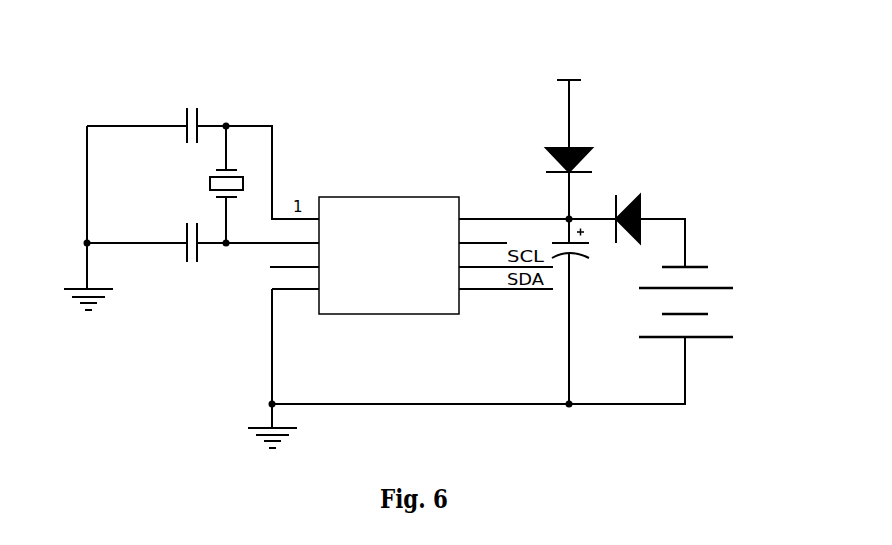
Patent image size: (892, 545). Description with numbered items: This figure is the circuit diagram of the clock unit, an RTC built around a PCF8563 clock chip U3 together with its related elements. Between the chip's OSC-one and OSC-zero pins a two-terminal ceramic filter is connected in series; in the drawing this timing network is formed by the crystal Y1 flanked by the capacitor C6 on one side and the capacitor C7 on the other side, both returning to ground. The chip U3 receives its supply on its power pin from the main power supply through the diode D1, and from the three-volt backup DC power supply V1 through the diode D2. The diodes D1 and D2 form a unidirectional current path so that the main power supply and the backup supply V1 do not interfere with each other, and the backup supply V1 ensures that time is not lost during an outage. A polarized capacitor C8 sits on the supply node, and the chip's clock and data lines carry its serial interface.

The capacitor 15pF C6 is at (183, 113).
The capacitor 15pF C7 is at (182, 256).
The crystal oscillator 32.768K Y1 is at (187, 189).
The real-time clock chip PCA8563 U3 is at (388, 244).
The diode D1 is at (614, 139).
The diode D2 is at (687, 219).
The polarized capacitor 100pF C8 is at (601, 258).
The backup DC power supply V1 is at (699, 302).